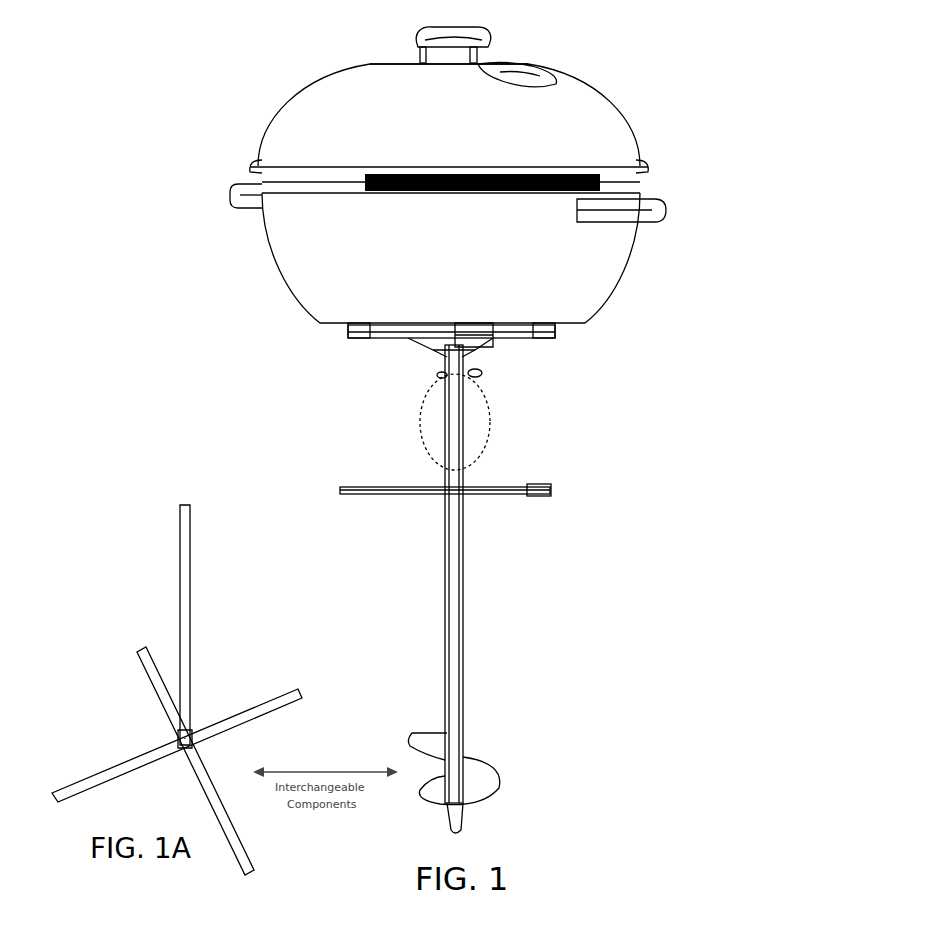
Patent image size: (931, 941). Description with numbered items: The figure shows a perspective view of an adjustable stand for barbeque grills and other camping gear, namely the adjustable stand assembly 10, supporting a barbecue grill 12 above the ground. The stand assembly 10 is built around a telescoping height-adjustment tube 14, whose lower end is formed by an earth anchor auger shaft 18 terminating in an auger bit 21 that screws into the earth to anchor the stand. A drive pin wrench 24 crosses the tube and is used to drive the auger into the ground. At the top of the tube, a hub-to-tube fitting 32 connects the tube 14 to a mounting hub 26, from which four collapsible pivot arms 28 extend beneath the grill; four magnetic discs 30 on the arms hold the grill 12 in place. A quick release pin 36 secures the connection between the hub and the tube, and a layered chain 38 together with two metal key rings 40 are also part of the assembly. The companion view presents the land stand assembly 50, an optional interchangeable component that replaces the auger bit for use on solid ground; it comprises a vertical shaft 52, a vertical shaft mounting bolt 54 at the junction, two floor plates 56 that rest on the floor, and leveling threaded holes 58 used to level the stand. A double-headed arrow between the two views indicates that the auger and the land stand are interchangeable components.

In FIG. 1, the adjustable stand assembly 10 is at (718, 623).
In FIG. 1, the barbecue grill 12 is at (246, 265).
In FIG. 1, the telescoping height-adjustment tube 14 is at (464, 625).
In FIG. 1, the earth anchor auger shaft 18 is at (464, 740).
In FIG. 1, the auger bit 21 is at (486, 792).
In FIG. 1, the drive pin wrench 24 is at (520, 493).
In FIG. 1, the mounting hub 26 is at (490, 343).
In FIG. 1, the collapsible pivot arms 28 is at (372, 339).
In FIG. 1, the magnetic discs 30 is at (346, 334).
In FIG. 1, the hub-to-tube fitting 32 is at (446, 354).
In FIG. 1, the quick release pin 36 is at (470, 364).
In FIG. 1, the layered chain 38 is at (424, 428).
In FIG. 1, the metal key rings 40 is at (530, 484).
In FIG. 1A, the land stand assembly 50 is at (243, 560).
In FIG. 1A, the vertical shaft 52 is at (180, 606).
In FIG. 1A, the vertical shaft mounting bolt 54 is at (178, 737).
In FIG. 1A, the floor plates 56 is at (160, 690).
In FIG. 1A, the leveling threaded holes 58 is at (152, 652).